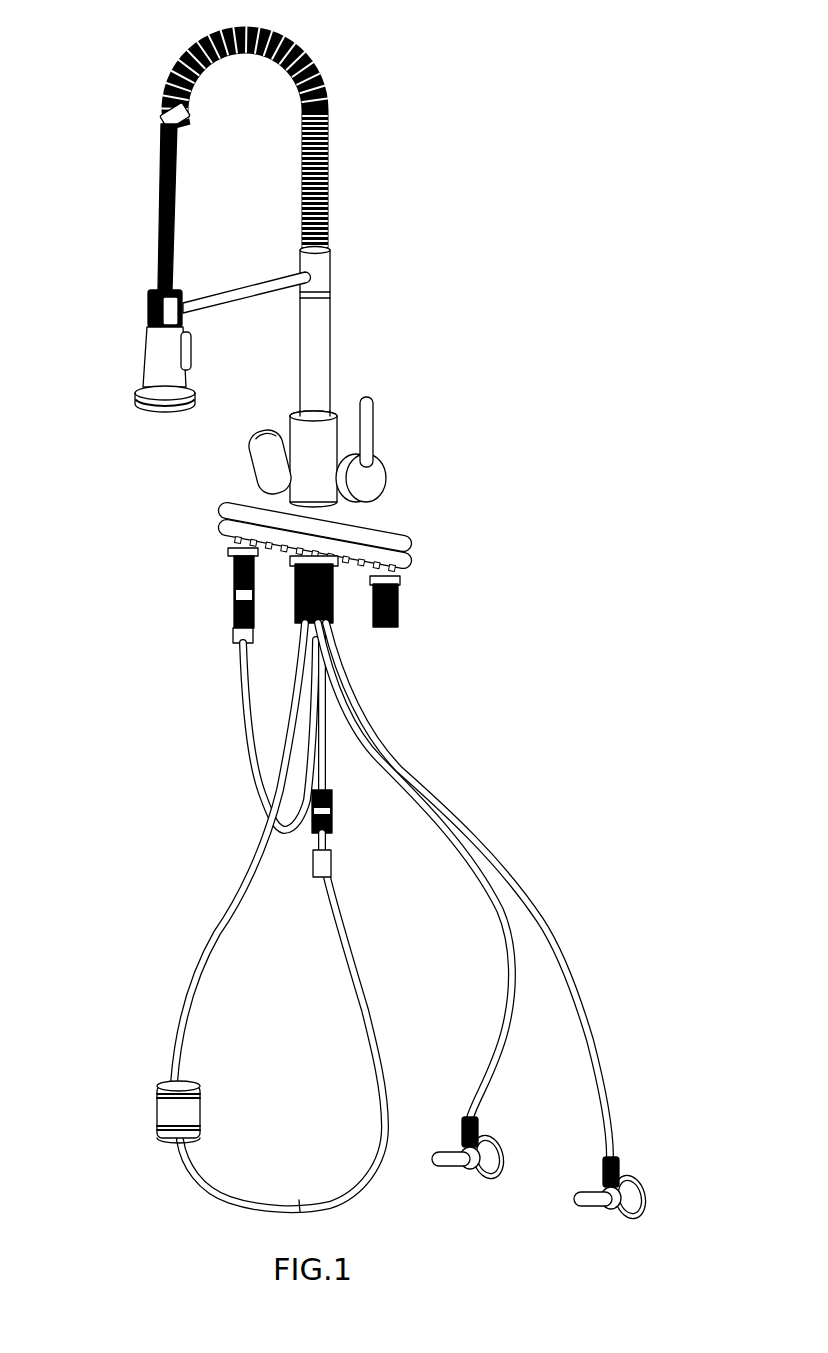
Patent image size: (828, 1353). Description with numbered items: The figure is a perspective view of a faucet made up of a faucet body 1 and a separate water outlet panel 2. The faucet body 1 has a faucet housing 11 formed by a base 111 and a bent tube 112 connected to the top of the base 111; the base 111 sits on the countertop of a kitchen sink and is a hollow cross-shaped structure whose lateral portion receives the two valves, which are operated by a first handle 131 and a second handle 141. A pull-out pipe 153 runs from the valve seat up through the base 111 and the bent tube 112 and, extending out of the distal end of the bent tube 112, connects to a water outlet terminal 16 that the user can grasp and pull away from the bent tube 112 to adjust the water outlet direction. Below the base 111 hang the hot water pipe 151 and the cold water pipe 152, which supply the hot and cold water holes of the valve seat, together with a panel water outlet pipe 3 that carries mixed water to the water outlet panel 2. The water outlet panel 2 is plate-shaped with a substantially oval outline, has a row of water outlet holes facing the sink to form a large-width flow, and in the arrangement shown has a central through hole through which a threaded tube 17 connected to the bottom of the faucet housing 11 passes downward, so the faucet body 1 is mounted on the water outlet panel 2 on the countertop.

The faucet body 1 is at (387, 381).
The faucet housing 11 is at (356, 232).
The bent tube 112 is at (331, 335).
The base 111 is at (267, 450).
The first handle 131 is at (367, 477).
The second handle 141 is at (267, 477).
The water outlet panel 2 is at (375, 548).
The water outlet terminal 16 is at (167, 367).
The threaded tube 17 is at (332, 624).
The panel water outlet pipe 3 is at (247, 702).
The pull-out pipe 153 is at (217, 940).
The hot water pipe 151 is at (577, 993).
The cold water pipe 152 is at (488, 1047).